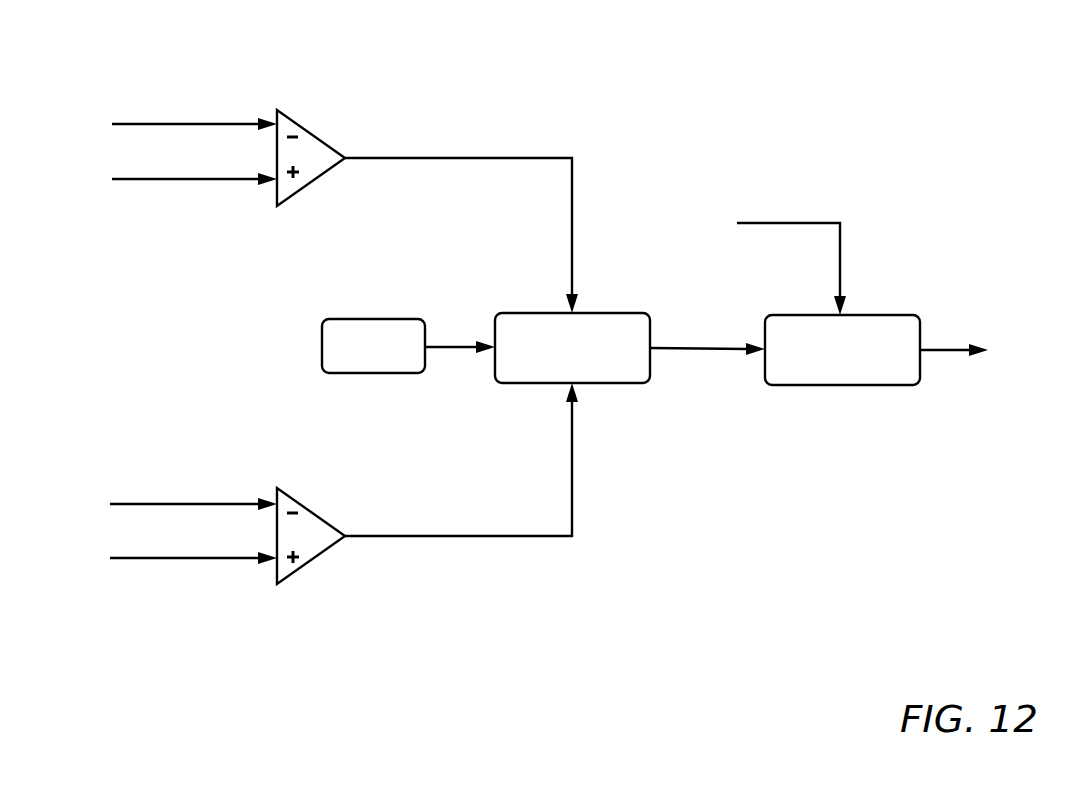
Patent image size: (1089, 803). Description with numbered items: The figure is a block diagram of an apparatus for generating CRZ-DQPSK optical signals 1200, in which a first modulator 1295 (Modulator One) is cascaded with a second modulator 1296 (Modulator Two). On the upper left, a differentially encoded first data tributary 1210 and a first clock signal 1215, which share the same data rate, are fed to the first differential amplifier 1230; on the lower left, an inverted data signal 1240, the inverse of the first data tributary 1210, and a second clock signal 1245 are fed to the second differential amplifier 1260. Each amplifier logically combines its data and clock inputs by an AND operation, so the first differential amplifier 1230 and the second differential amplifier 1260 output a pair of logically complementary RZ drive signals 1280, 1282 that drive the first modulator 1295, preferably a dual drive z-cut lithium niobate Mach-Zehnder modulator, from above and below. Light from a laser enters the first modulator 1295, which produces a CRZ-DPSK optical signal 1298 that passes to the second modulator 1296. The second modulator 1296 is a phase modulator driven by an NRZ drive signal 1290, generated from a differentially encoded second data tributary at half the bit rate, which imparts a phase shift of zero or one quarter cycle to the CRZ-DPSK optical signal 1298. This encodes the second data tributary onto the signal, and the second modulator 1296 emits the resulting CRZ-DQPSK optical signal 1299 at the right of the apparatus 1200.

The apparatus for generating CRZ-DQPSK optical signals 1200 is at (695, 39).
The first data tributary 1210 is at (165, 90).
The first clock signal 1215 is at (148, 156).
The differential amplifier DA #1 1230 is at (307, 185).
The inverted data signal 1240 is at (133, 472).
The second clock signal 1245 is at (140, 536).
The differential amplifier DA #2 1260 is at (308, 562).
The RZ drive signal 1280 is at (527, 156).
The RZ drive signal 1282 is at (542, 538).
The NRZ drive signal 1290 is at (778, 222).
The first modulator 1295 is at (520, 311).
The second modulator 1296 is at (788, 314).
The CRZ-DPSK optical signal 1298 is at (693, 352).
The CRZ-DQPSK optical signal 1299 is at (960, 345).